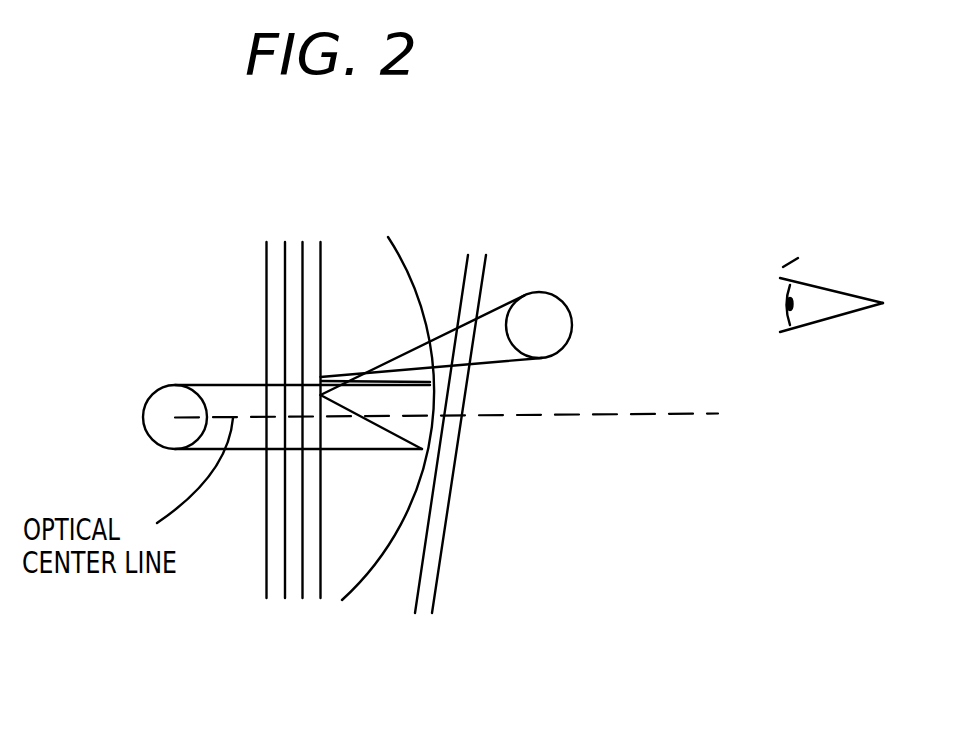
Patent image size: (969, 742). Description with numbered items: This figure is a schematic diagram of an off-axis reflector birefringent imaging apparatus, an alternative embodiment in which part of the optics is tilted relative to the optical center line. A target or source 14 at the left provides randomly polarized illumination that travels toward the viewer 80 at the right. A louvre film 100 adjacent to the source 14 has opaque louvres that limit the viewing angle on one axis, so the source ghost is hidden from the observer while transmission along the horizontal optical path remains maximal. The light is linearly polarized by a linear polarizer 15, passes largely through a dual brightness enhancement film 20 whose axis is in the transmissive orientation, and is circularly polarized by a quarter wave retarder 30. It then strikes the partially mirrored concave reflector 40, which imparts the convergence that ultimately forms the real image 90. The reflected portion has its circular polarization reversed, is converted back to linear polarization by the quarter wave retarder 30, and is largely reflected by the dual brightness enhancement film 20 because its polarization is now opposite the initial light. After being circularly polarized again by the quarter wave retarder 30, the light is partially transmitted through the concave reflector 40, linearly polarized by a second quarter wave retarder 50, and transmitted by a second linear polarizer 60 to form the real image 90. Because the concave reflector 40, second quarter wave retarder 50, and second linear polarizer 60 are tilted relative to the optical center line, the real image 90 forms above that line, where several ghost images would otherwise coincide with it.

The source 14 is at (157, 404).
The louvre film 100 is at (266, 598).
The linear polarizer 15 is at (285, 598).
The dual brightness enhancement film 20 is at (303, 598).
The quarter wave retarder 30 is at (321, 598).
The partially mirrored concave reflector 40 is at (353, 588).
The second quarter wave retarder 50 is at (415, 613).
The second linear polarizer 60 is at (432, 613).
The viewer 80 is at (817, 297).
The real image 90 is at (552, 310).